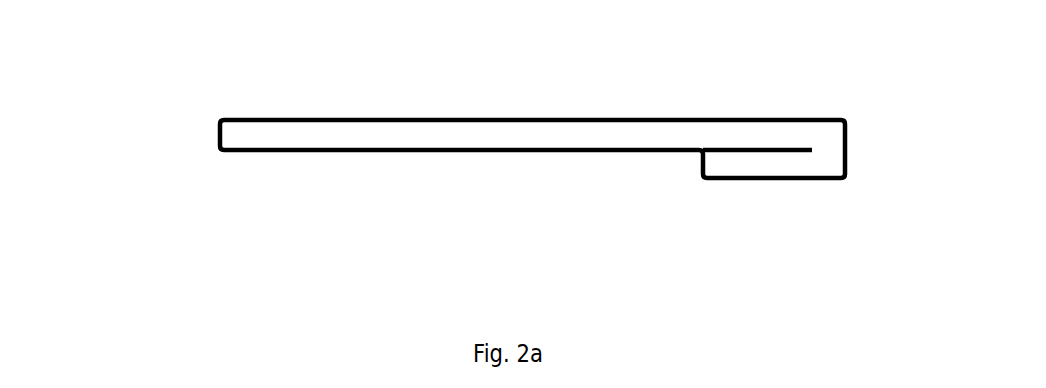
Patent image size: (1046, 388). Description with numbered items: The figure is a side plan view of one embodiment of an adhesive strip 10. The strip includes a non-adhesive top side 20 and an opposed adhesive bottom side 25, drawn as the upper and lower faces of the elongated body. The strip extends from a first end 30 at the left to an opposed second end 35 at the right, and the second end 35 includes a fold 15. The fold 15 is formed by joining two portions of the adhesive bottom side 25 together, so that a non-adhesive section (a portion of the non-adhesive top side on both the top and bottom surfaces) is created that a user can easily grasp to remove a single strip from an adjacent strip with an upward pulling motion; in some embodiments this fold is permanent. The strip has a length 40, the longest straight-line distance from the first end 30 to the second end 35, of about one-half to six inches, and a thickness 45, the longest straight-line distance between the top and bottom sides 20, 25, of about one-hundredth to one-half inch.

The adhesive strip 10 is at (121, 95).
The fold 15 is at (845, 192).
The non-adhesive top side 20 is at (276, 118).
The adhesive bottom side 25 is at (260, 156).
The first end 30 is at (218, 129).
The second end 35 is at (848, 151).
The length 40 is at (842, 254).
The thickness 45 is at (892, 120).